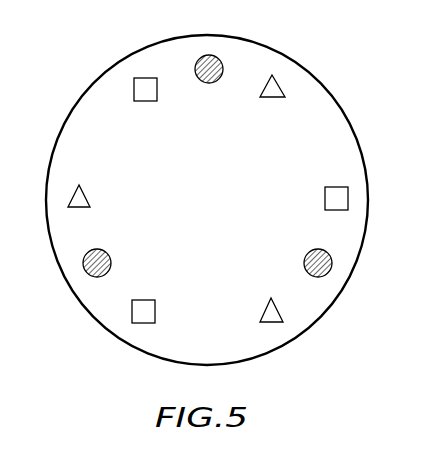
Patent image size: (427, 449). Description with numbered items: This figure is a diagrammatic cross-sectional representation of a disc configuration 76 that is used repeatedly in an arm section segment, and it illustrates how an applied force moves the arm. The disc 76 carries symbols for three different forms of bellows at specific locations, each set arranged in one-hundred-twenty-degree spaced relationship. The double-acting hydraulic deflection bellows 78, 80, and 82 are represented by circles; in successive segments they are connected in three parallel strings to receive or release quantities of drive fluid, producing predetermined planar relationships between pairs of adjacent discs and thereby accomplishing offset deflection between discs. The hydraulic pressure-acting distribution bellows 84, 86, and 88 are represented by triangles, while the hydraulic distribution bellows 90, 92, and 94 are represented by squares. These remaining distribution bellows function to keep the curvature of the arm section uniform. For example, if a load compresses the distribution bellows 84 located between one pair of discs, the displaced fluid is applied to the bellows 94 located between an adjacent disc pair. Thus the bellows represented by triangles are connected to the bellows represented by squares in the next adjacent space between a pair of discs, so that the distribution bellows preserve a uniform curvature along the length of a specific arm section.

The disc configuration 76 is at (368, 134).
The double-acting hydraulic deflection bellows 78 is at (209, 55).
The double-acting hydraulic deflection bellows 80 is at (332, 265).
The double-acting hydraulic deflection bellows 82 is at (90, 275).
The hydraulic pressure-acting distribution bellows 84 is at (284, 86).
The hydraulic pressure-acting distribution bellows 86 is at (271, 322).
The hydraulic pressure-acting distribution bellows 88 is at (70, 190).
The hydraulic distribution bellows 90 is at (146, 78).
The hydraulic distribution bellows 92 is at (348, 197).
The hydraulic distribution bellows 94 is at (143, 323).